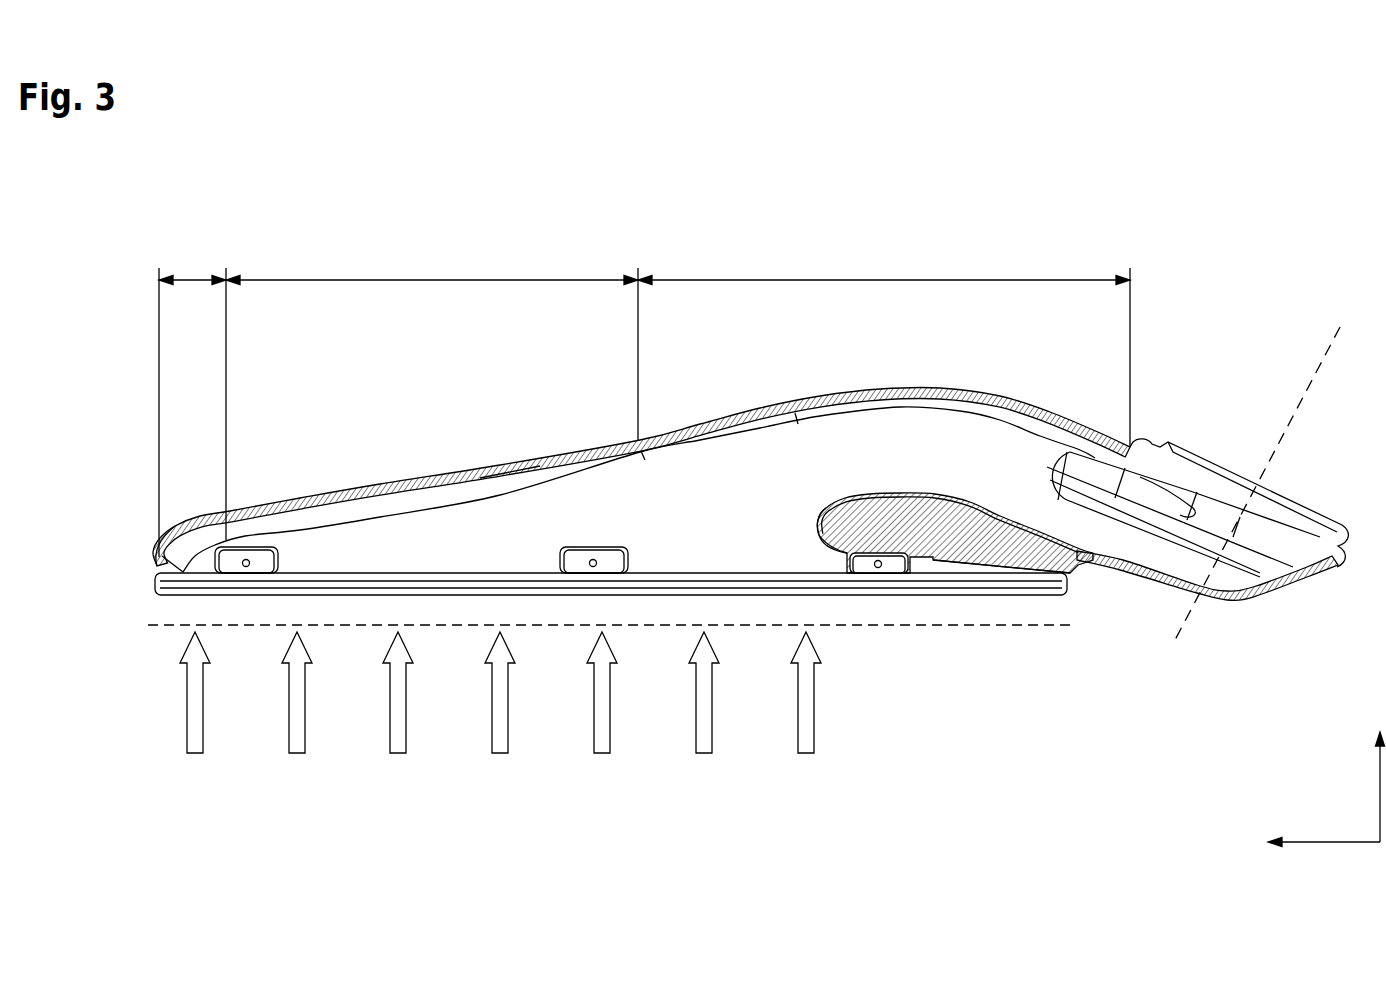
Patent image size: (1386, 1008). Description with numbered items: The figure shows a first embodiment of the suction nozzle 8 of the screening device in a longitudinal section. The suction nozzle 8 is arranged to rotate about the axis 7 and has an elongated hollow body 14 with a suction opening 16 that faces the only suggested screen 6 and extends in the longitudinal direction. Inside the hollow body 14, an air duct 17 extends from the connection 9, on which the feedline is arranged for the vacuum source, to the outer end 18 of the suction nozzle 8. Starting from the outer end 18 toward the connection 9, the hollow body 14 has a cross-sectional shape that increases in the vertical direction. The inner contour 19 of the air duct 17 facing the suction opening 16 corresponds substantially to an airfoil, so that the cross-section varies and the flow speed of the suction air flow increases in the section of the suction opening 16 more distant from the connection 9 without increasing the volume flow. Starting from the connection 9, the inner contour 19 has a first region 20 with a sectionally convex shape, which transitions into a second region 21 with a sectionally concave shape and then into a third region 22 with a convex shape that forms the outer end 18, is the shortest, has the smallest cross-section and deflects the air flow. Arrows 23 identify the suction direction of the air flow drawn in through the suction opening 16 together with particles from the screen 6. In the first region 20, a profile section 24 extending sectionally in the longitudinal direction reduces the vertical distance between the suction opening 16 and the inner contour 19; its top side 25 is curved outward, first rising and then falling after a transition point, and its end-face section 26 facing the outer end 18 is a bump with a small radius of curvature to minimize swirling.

The screen 6 is at (1020, 630).
The axis 7 is at (1312, 375).
The suction nozzle 8 is at (134, 338).
The connection 9 is at (1304, 497).
The hollow body 14 is at (988, 392).
The suction opening 16 is at (180, 612).
The air duct 17 is at (706, 521).
The outer end 18 is at (157, 560).
The inner contour 19 is at (511, 500).
The first region 20 is at (890, 280).
The second region 21 is at (428, 280).
The third region 22 is at (193, 280).
The arrows 23 is at (297, 753).
The profile section 24 is at (934, 578).
The top side 25 is at (876, 494).
The end-face section 26 is at (817, 520).